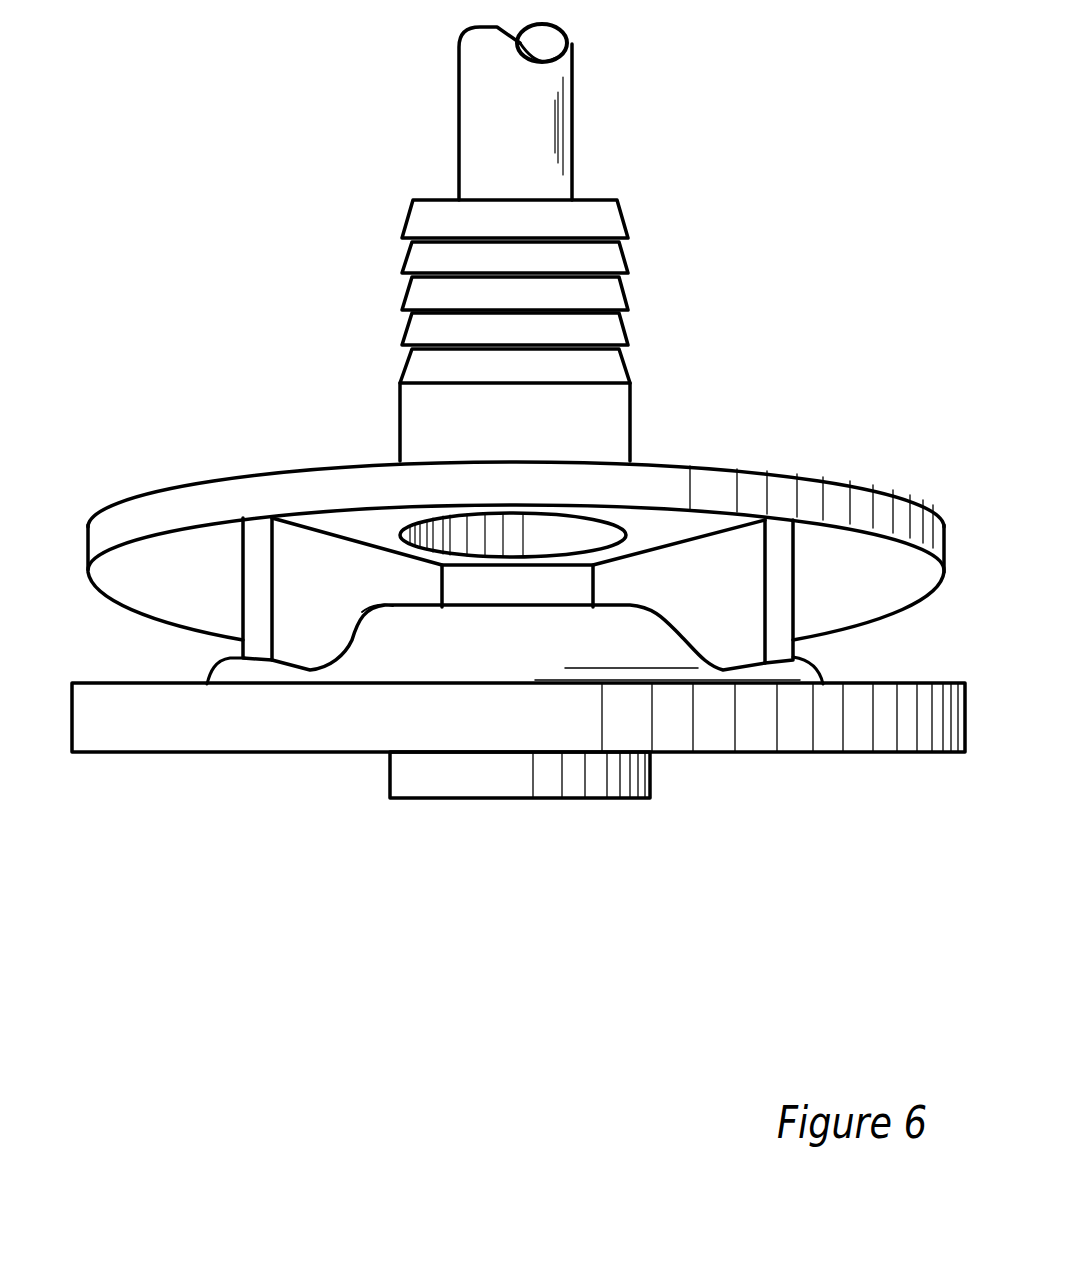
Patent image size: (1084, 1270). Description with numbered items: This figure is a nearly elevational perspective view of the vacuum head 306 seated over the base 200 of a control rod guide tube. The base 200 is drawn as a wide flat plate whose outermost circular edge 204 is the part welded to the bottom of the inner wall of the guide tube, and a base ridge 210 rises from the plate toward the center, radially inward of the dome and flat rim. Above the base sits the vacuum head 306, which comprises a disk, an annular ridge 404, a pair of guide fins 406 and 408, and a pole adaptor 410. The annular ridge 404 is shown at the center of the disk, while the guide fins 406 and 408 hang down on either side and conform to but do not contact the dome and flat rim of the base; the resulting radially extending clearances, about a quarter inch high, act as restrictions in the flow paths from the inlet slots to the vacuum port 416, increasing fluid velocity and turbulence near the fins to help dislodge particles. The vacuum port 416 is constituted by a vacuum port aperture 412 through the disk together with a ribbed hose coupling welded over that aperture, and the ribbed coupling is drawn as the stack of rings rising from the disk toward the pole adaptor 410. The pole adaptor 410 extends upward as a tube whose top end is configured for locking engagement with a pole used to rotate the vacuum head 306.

The base 200 is at (206, 773).
The circular edge 204 is at (122, 724).
The base ridge 210 is at (525, 641).
The vacuum head 306 is at (200, 439).
The annular ridge 404 is at (518, 592).
The guide fin 406 is at (242, 645).
The guide fin 408 is at (783, 647).
The pole adaptor 410 is at (459, 122).
The vacuum port aperture 412 is at (557, 540).
The vacuum port 416 is at (630, 432).